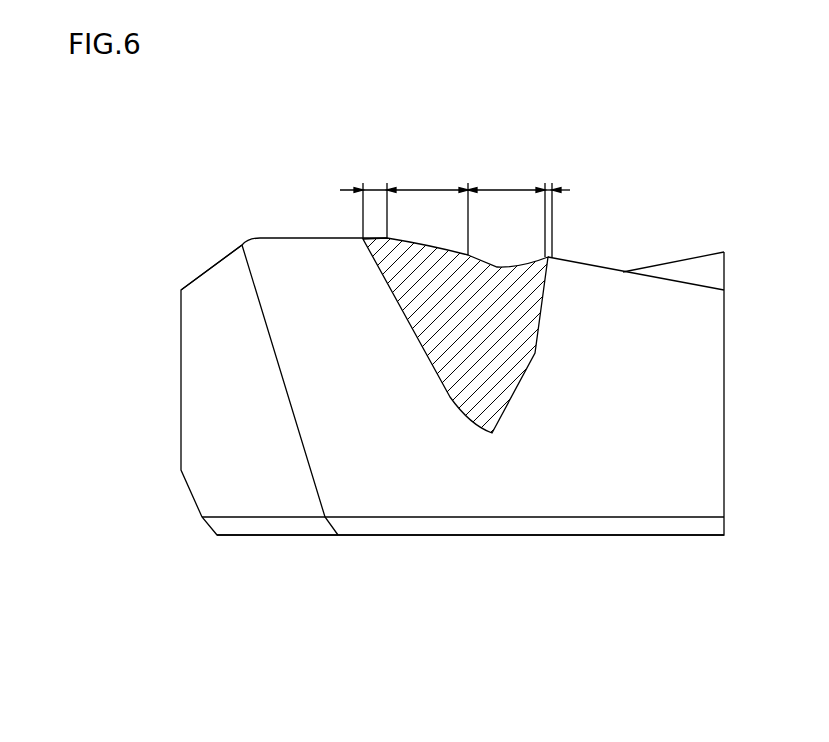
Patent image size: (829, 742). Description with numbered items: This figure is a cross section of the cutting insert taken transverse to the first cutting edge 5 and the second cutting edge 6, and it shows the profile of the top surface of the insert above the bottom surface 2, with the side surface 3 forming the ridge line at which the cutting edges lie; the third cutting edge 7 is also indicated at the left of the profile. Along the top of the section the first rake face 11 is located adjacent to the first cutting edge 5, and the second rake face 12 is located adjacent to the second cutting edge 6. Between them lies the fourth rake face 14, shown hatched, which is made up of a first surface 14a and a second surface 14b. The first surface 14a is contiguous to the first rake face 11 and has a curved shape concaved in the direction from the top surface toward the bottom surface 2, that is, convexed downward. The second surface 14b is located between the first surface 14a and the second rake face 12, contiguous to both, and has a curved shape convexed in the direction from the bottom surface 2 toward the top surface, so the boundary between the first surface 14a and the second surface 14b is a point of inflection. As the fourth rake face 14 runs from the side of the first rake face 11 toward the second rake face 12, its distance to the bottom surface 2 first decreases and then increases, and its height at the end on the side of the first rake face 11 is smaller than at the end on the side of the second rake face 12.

The bottom surface 2 is at (580, 534).
The side surface 3 is at (447, 485).
The first cutting edge 5 is at (602, 267).
The second cutting edge 6 is at (296, 237).
The third cutting edge 7 is at (209, 265).
The first rake face 11 is at (548, 182).
The second rake face 12 is at (375, 183).
The fourth rake face 14 is at (510, 158).
The first surface 14a is at (506, 179).
The second surface 14b is at (427, 179).